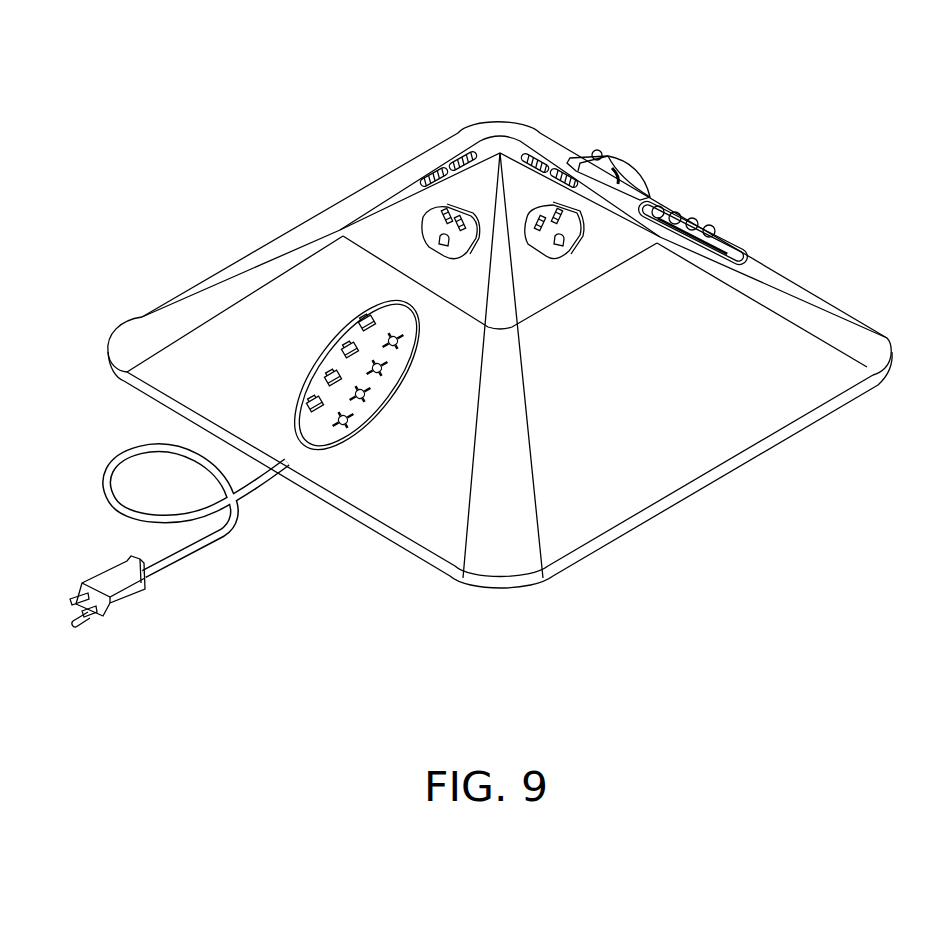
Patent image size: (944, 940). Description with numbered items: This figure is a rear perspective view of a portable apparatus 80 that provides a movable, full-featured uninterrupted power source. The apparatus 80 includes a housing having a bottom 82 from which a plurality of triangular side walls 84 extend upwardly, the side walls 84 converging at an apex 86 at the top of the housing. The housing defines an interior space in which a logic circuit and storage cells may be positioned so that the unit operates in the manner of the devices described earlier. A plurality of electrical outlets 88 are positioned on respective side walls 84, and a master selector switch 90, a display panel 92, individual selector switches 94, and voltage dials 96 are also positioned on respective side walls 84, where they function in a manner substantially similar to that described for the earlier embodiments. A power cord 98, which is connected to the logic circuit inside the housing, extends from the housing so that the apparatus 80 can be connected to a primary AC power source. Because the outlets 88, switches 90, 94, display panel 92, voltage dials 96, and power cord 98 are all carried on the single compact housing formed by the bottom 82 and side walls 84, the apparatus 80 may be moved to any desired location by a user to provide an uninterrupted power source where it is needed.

The apparatus 80 is at (254, 55).
The bottom 82 is at (657, 514).
The triangular side walls 84 is at (439, 486).
The apex 86 is at (499, 150).
The electrical outlets 88 is at (425, 243).
The master selector switch 90 is at (600, 149).
The display panel 92 is at (738, 248).
The individual selector switches 94 is at (357, 298).
The voltage dials 96 is at (415, 330).
The power cord 98 is at (190, 548).